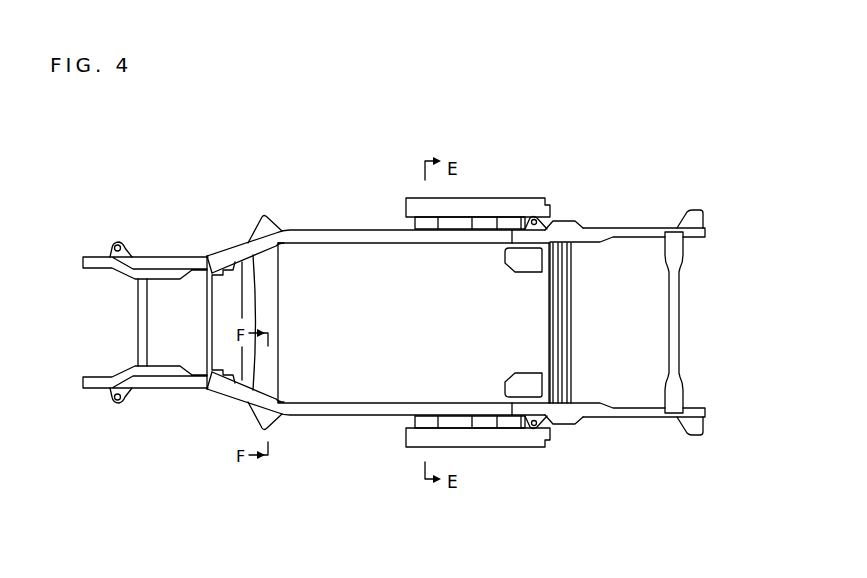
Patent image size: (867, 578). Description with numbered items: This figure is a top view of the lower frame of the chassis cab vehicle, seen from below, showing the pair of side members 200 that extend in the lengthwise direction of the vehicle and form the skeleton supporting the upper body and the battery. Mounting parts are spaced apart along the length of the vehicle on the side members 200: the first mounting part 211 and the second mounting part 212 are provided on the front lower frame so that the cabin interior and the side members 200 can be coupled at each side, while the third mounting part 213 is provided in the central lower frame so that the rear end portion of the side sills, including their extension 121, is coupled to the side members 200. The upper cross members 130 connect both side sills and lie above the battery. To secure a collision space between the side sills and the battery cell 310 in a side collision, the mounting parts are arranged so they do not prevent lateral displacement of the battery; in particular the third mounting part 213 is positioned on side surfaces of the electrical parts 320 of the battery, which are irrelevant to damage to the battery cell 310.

The extension 121 is at (480, 210).
The upper cross member 130 is at (424, 222).
The side member 200 is at (241, 250).
The first mounting part 211 is at (117, 243).
The second mounting part 212 is at (263, 217).
The third mounting part 213 is at (530, 430).
The battery cell 310 is at (318, 252).
The electrical parts 320 is at (525, 262).